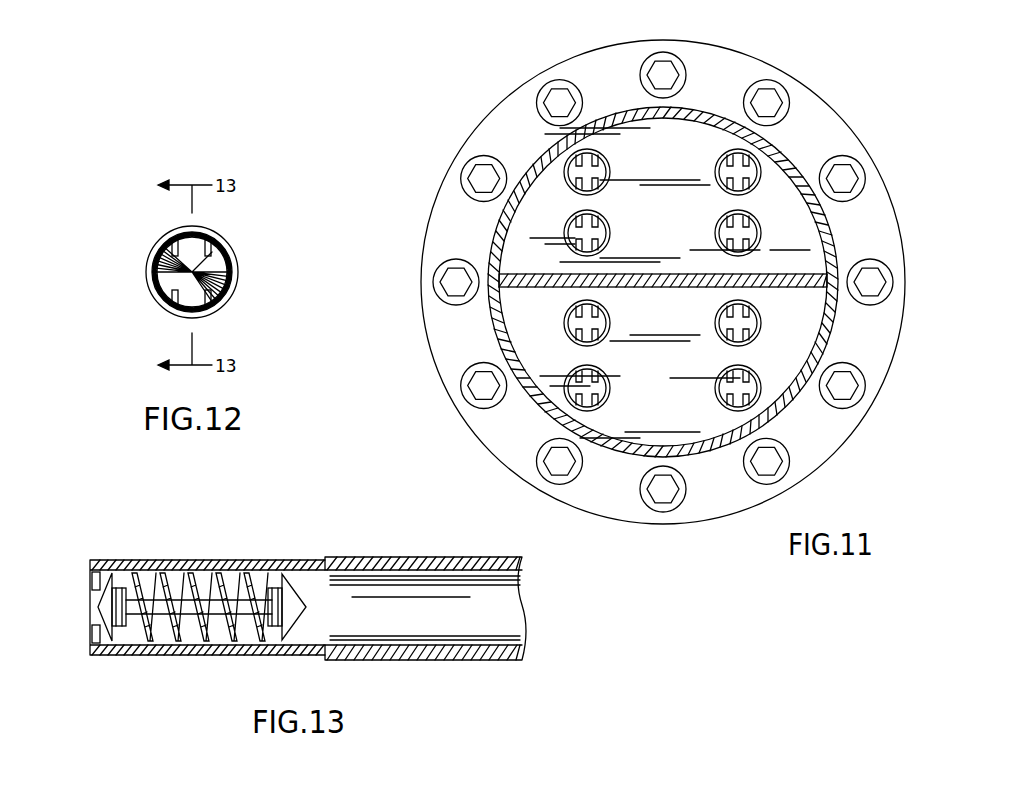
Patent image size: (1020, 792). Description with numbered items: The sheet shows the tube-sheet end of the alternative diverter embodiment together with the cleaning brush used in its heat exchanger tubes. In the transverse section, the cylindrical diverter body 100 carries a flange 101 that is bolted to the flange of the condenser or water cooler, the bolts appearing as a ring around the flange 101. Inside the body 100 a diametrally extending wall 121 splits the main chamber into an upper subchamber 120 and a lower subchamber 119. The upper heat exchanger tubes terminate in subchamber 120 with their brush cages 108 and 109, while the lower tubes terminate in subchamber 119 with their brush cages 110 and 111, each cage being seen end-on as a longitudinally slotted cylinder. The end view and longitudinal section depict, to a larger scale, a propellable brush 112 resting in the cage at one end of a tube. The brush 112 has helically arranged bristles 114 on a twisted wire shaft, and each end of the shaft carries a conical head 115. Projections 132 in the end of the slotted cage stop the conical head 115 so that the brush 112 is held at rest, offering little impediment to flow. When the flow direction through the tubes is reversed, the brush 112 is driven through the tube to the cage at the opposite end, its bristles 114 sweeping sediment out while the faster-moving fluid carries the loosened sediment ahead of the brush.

In FIG. 11, the cylindrical diverter body 100 is at (842, 331).
In FIG. 11, the flange 101 is at (820, 138).
In FIG. 11, the brush cage 108 is at (715, 172).
In FIG. 11, the brush cage 109 is at (715, 238).
In FIG. 11, the brush cage 110 is at (716, 322).
In FIG. 11, the brush cage 111 is at (716, 402).
In FIG. 13, the propellable brush 112 is at (268, 584).
In FIG. 12, the helically arranged bristles 114 is at (232, 292).
In FIG. 13, the helically arranged bristles 114 is at (200, 574).
In FIG. 12, the conical head 115 is at (215, 265).
In FIG. 13, the conical head 115 is at (96, 616).
In FIG. 11, the lower subchamber 119 is at (682, 369).
In FIG. 11, the upper subchamber 120 is at (685, 214).
In FIG. 11, the diametrally extending wall 121 is at (803, 310).
In FIG. 12, the projection 132 is at (208, 250).
In FIG. 13, the projection 132 is at (93, 578).